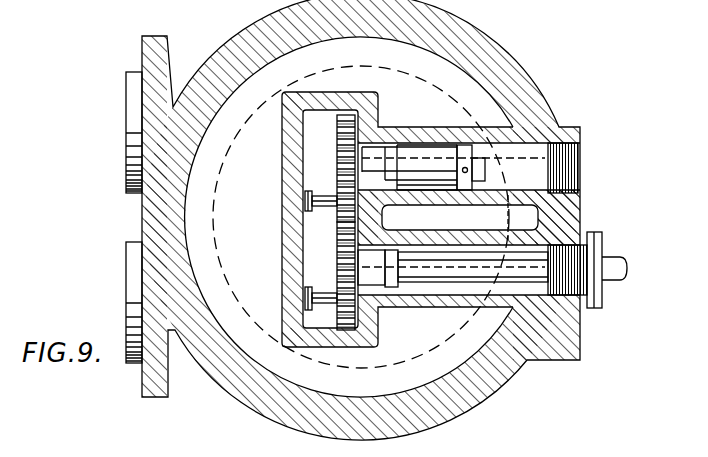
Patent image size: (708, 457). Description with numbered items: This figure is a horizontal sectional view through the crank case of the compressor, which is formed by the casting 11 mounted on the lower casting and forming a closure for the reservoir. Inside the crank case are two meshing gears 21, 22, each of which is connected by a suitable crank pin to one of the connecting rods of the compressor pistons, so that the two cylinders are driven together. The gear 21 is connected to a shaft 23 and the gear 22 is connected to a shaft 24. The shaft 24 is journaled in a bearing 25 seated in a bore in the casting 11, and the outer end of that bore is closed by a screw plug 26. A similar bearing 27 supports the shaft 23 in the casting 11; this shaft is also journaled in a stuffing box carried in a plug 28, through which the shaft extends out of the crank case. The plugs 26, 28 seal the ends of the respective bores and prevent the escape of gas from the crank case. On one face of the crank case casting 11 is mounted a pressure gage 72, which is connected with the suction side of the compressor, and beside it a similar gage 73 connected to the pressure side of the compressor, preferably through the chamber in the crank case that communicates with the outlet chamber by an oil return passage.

The casting 11 is at (494, 51).
The gear 21 is at (341, 229).
The gear 22 is at (338, 132).
The shaft 23 is at (462, 278).
The shaft 24 is at (485, 172).
The bearing 25 is at (419, 150).
The screw plug 26 is at (581, 181).
The bearing 27 is at (407, 288).
The plug 28 is at (601, 252).
The pressure gage 72 is at (124, 128).
The gage 73 is at (126, 271).